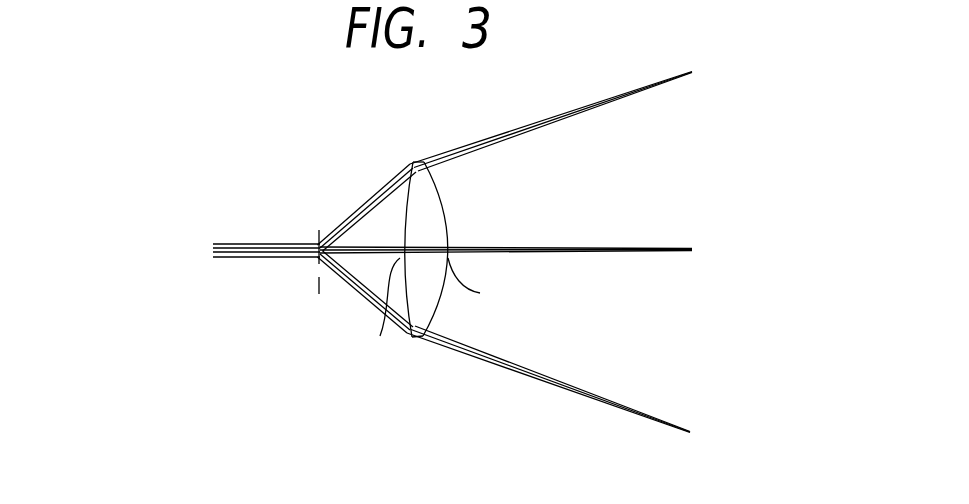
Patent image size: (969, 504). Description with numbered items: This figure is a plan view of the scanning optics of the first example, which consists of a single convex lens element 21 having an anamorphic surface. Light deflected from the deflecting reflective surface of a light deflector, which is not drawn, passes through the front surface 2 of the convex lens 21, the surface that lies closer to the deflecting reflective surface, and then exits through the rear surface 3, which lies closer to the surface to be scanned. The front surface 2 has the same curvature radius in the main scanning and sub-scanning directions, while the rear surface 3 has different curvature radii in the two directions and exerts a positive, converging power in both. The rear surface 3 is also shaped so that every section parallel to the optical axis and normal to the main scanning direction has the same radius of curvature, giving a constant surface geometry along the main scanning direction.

The convex lens element 21 is at (404, 199).
The front surface of the convex lens 2 is at (388, 263).
The rear surface of the convex lens 3 is at (469, 249).